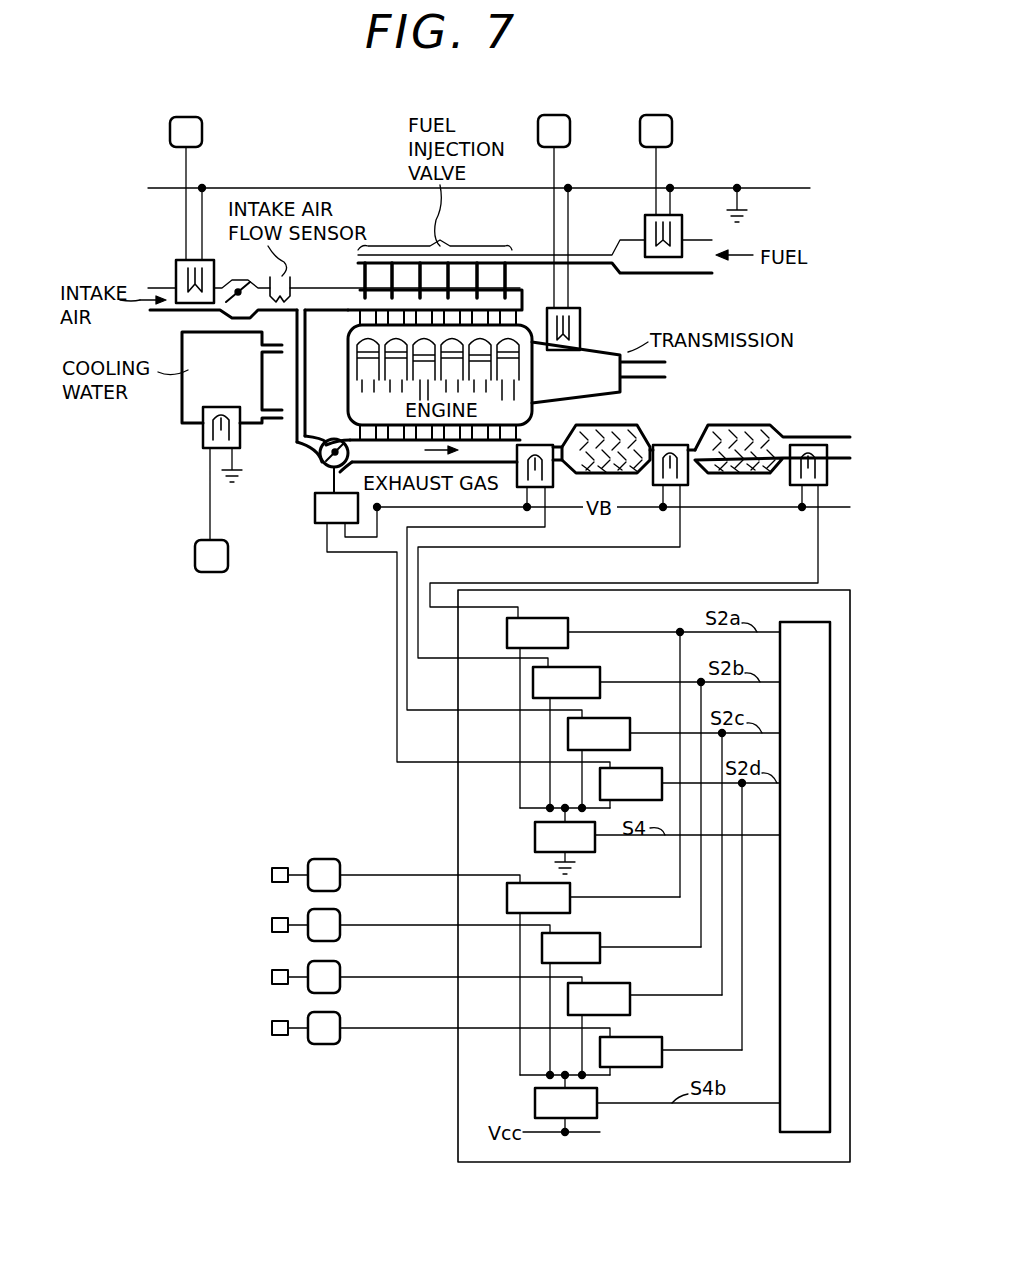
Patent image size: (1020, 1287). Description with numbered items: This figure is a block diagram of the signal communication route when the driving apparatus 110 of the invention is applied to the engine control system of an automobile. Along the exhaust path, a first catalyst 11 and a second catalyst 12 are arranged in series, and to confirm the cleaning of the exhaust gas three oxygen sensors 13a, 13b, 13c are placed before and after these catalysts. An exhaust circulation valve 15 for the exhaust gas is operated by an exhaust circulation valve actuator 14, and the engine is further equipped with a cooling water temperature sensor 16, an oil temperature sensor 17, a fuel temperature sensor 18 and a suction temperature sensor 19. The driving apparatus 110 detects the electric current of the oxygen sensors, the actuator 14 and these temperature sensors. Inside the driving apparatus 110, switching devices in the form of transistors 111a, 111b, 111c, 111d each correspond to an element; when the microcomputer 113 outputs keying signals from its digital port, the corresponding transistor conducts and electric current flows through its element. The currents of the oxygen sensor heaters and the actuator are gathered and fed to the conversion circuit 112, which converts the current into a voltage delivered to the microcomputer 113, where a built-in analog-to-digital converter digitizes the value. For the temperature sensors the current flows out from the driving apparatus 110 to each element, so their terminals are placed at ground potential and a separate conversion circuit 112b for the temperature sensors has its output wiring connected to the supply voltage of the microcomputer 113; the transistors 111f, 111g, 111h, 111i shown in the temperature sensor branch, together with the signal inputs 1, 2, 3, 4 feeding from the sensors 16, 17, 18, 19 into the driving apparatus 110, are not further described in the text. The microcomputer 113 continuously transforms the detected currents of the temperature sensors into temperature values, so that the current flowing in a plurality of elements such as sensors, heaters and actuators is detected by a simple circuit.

The cooling water temperature signal input 1 is at (357, 715).
The oil temperature signal input 2 is at (439, 528).
The fuel temperature signal input 3 is at (490, 554).
The suction temperature signal input 4 is at (390, 580).
The first catalyst 11 is at (588, 473).
The second catalyst 12 is at (725, 473).
The oxygen sensor 13a is at (548, 442).
The oxygen sensor 13b is at (655, 487).
The oxygen sensor 13c is at (797, 487).
The exhaust circulation valve actuator 14 is at (315, 504).
The exhaust circulation valve 15 is at (326, 470).
The cooling water temperature sensor 16 is at (203, 432).
The oil temperature sensor 17 is at (582, 332).
The fuel temperature sensor 18 is at (244, 980).
The suction temperature sensor 19 is at (272, 1030).
The driving apparatus 110 is at (825, 588).
The transistor 111a is at (570, 620).
The transistor 111b is at (600, 670).
The transistor 111c is at (618, 714).
The transistor 111d is at (618, 760).
The signal processing circuit 111f is at (575, 884).
The signal processing circuit 111g is at (604, 937).
The signal processing circuit 111h is at (636, 981).
The signal processing circuit 111i is at (668, 1034).
The conversion circuit 112 is at (534, 832).
The conversion circuit for a temperature sensor 112b is at (597, 1091).
The microcomputer 113 is at (795, 622).